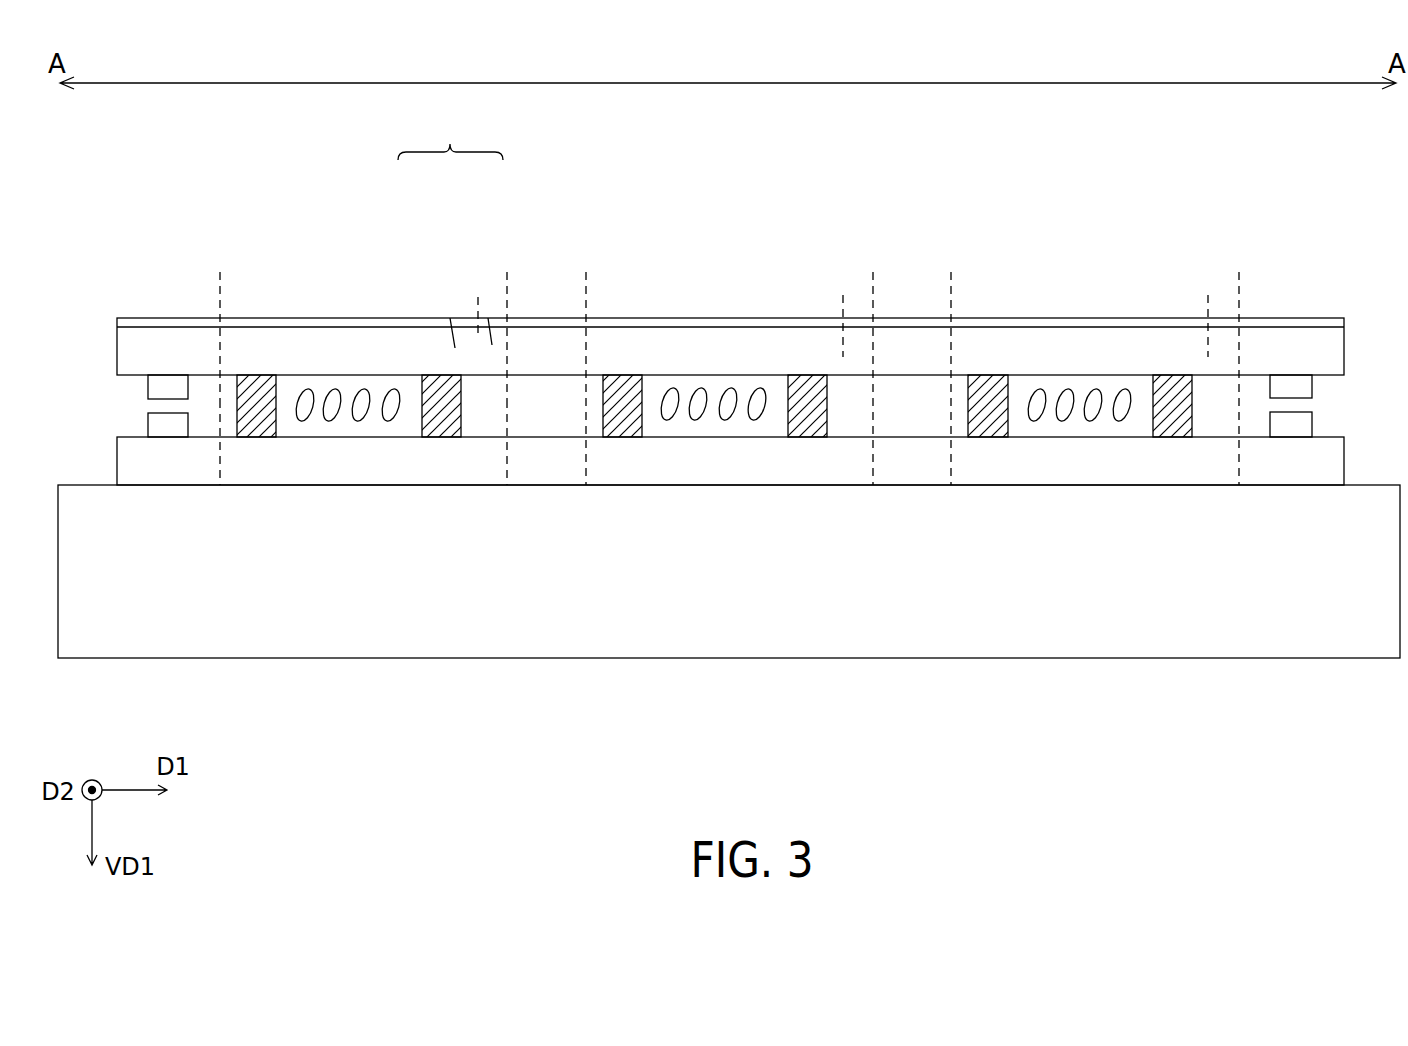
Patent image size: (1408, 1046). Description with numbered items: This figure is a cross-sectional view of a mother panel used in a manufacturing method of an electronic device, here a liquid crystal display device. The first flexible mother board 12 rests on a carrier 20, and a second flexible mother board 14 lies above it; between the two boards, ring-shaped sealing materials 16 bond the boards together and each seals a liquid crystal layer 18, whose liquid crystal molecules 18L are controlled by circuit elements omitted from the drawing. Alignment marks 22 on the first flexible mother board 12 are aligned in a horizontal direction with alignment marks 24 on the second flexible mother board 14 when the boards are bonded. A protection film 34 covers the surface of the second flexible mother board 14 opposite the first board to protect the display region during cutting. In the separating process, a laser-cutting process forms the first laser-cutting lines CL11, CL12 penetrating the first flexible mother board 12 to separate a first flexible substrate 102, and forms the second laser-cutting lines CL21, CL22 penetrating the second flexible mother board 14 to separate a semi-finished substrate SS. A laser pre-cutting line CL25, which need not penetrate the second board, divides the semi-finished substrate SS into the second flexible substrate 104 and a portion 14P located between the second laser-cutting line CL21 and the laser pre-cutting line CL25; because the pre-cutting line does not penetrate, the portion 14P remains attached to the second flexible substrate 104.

The first flexible mother board 12 is at (1299, 462).
The second flexible mother board 14 is at (1327, 341).
The portion of the semi-finished substrate 14P is at (489, 325).
The sealing material 16 is at (253, 392).
The liquid crystal layer 18 is at (350, 395).
The liquid crystal molecules 18L is at (395, 395).
The carrier 20 is at (870, 598).
The alignment marks 22 is at (170, 427).
The alignment marks 24 is at (168, 388).
The protection film 34 is at (1162, 325).
The first flexible substrate 102 is at (307, 355).
The second flexible substrate 104 is at (452, 330).
The first laser-cutting line CL11 is at (507, 465).
The first laser-cutting line CL12 is at (219, 465).
The second laser-cutting line CL21 is at (508, 287).
The second laser-cutting line CL22 is at (218, 287).
The laser pre-cutting line CL25 is at (478, 342).
The semi-finished substrate SS is at (450, 135).